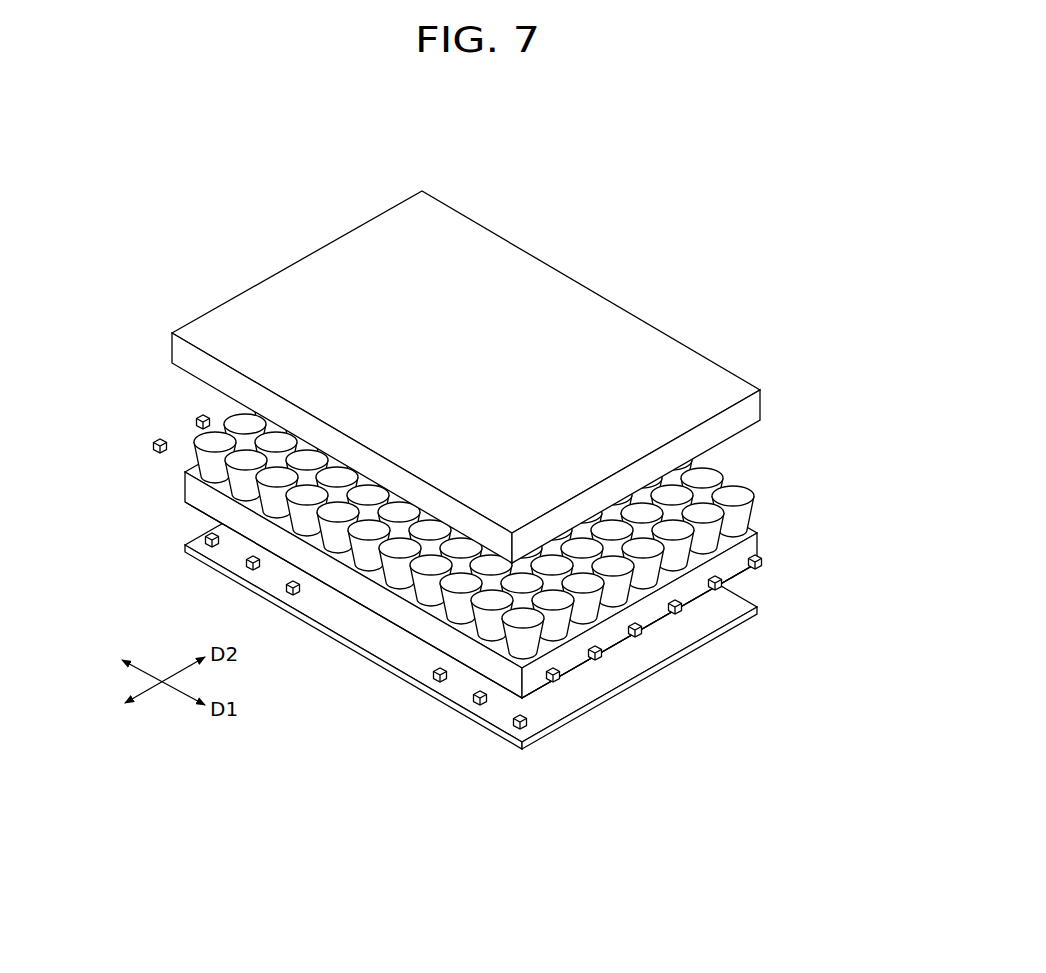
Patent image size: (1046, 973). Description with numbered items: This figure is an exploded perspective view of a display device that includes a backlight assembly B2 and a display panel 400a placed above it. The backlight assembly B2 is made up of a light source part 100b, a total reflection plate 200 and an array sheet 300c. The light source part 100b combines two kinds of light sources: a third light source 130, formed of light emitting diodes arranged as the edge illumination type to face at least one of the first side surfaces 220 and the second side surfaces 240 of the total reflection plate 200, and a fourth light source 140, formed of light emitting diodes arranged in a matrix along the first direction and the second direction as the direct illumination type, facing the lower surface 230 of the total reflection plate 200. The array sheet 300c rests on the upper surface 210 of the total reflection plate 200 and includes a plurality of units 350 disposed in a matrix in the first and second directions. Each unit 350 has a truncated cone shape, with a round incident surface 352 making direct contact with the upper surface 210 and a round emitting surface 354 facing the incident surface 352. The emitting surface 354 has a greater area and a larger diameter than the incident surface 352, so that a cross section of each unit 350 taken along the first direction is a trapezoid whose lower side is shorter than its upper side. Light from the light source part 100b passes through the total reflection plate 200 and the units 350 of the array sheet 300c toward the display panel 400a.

The display panel 400a is at (762, 409).
The array sheet 300c is at (747, 468).
The unit 350 is at (650, 644).
The incident surface 352 is at (510, 645).
The emitting surface 354 is at (565, 603).
The total reflection plate 200 is at (471, 591).
The second side surface 240 is at (431, 632).
The lower surface 230 is at (466, 666).
The upper surface 210 is at (503, 640).
The first side surface 220 is at (528, 687).
The light source part 100b is at (92, 432).
The third light source 130 is at (153, 446).
The fourth light source 140 is at (199, 537).
The backlight assembly B2 is at (830, 808).